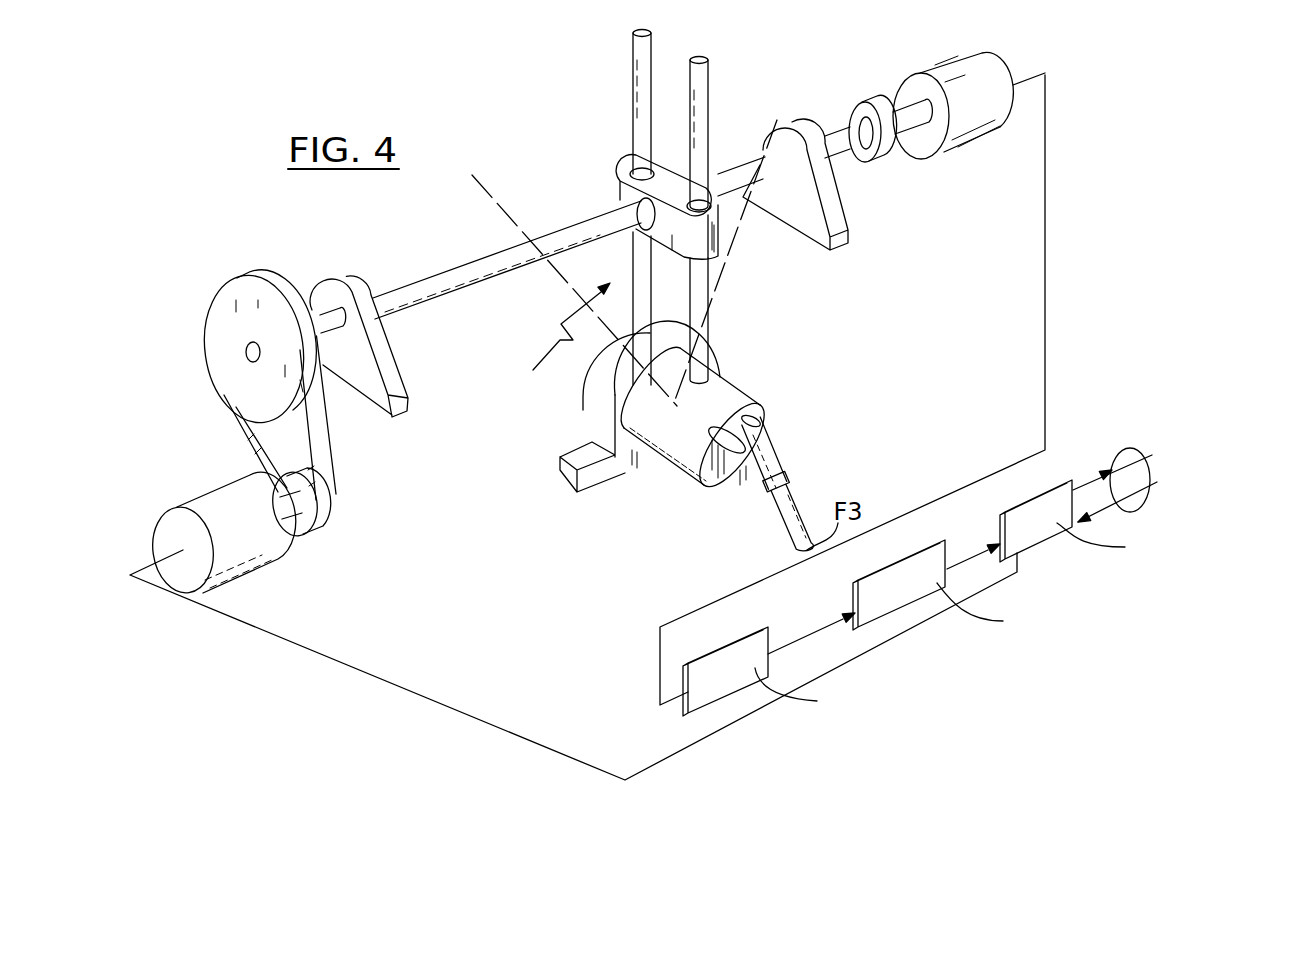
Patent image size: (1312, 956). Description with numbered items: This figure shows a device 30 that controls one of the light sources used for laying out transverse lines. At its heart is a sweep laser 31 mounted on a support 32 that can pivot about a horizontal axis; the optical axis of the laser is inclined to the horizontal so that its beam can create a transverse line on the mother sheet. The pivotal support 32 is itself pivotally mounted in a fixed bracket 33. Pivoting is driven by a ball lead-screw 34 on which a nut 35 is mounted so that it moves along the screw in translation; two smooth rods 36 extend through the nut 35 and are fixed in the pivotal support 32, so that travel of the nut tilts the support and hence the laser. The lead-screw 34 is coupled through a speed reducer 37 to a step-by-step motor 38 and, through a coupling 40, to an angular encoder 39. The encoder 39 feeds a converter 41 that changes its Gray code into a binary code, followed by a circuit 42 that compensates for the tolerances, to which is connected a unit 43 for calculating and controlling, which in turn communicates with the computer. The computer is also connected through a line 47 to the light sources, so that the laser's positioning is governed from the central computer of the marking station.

The device 30 is at (624, 263).
The sweep laser 31 is at (760, 442).
The support 32 is at (668, 451).
The fixed bracket 33 is at (607, 471).
The ball lead-screw 34 is at (410, 293).
The nut 35 is at (617, 183).
The smooth rods 36 is at (693, 307).
The speed reducer 37 is at (267, 310).
The step-by-step motor 38 is at (252, 558).
The angular encoder 39 is at (966, 70).
The coupling 40 is at (870, 103).
The converter 41 is at (808, 667).
The circuit for compensating for the tolerances 42 is at (1013, 603).
The unit for calculating and controlling 43 is at (1146, 538).
The line 47 is at (1127, 448).